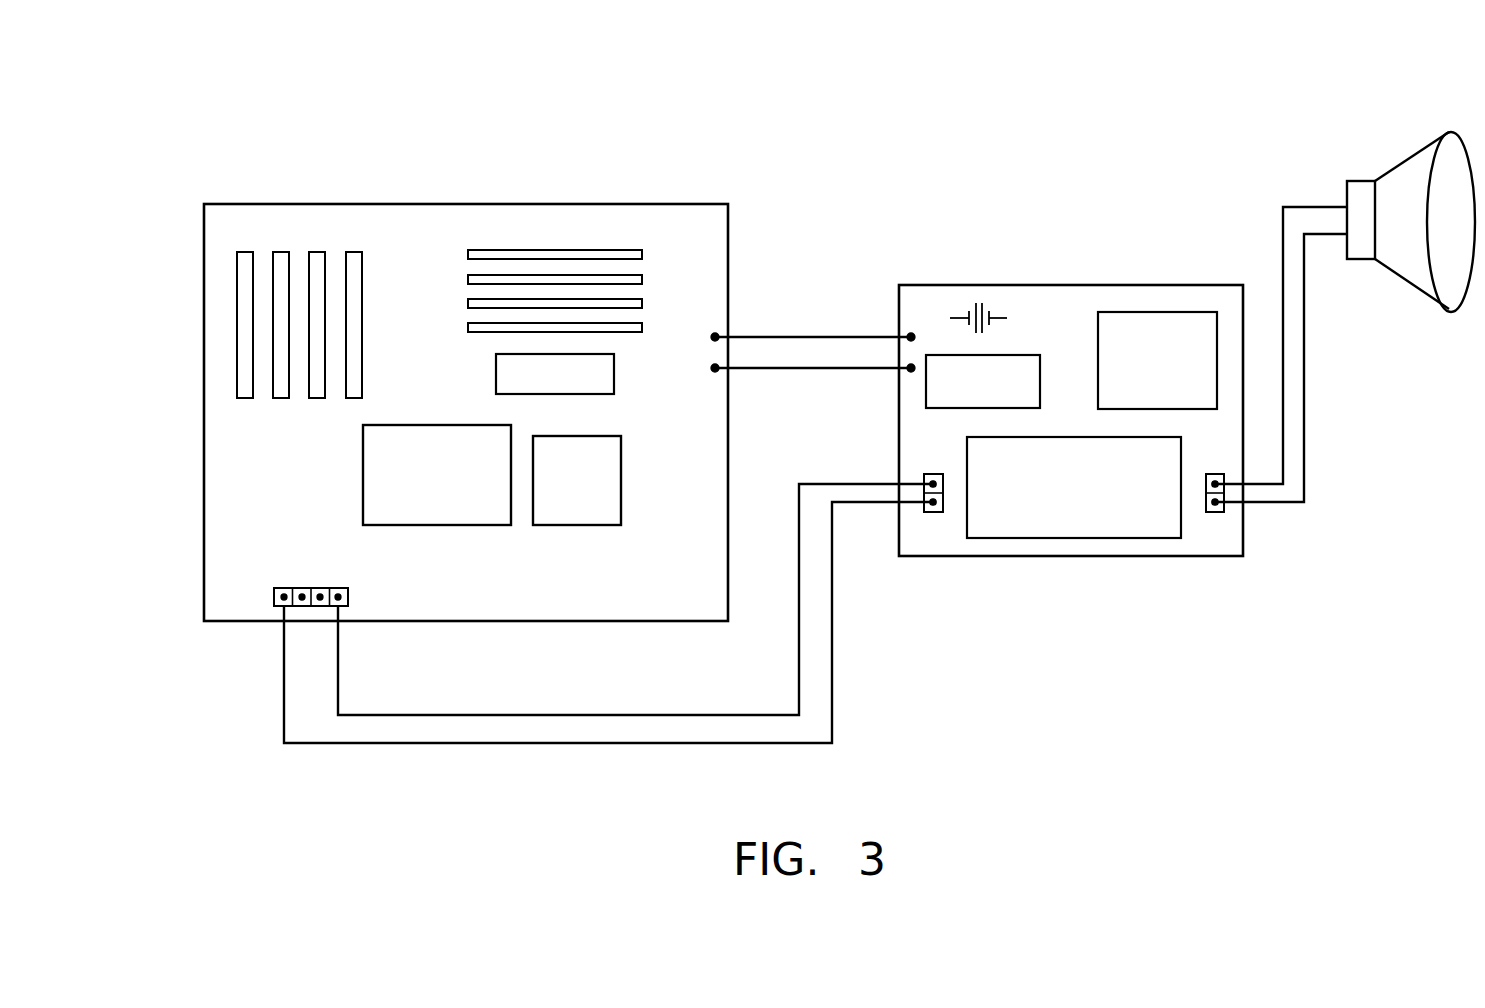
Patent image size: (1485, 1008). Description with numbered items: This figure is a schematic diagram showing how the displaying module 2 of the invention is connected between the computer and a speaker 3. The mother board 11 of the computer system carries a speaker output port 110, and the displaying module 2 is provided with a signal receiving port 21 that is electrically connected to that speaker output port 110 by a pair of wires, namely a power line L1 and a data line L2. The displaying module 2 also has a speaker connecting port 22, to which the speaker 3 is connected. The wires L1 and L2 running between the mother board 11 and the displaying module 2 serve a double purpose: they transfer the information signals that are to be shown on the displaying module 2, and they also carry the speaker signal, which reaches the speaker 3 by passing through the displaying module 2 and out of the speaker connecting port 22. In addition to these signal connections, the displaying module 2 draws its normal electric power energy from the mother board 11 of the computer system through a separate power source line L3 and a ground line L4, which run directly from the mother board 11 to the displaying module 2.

The mother board 11 is at (222, 450).
The speaker output port 110 is at (275, 598).
The displaying module 2 is at (1060, 295).
The signal receiving port 21 is at (933, 512).
The speaker connecting port 22 is at (1215, 512).
The speaker 3 is at (1402, 178).
The power line L1 is at (637, 714).
The data line L2 is at (560, 745).
The power source line L3 is at (817, 337).
The ground line L4 is at (819, 372).